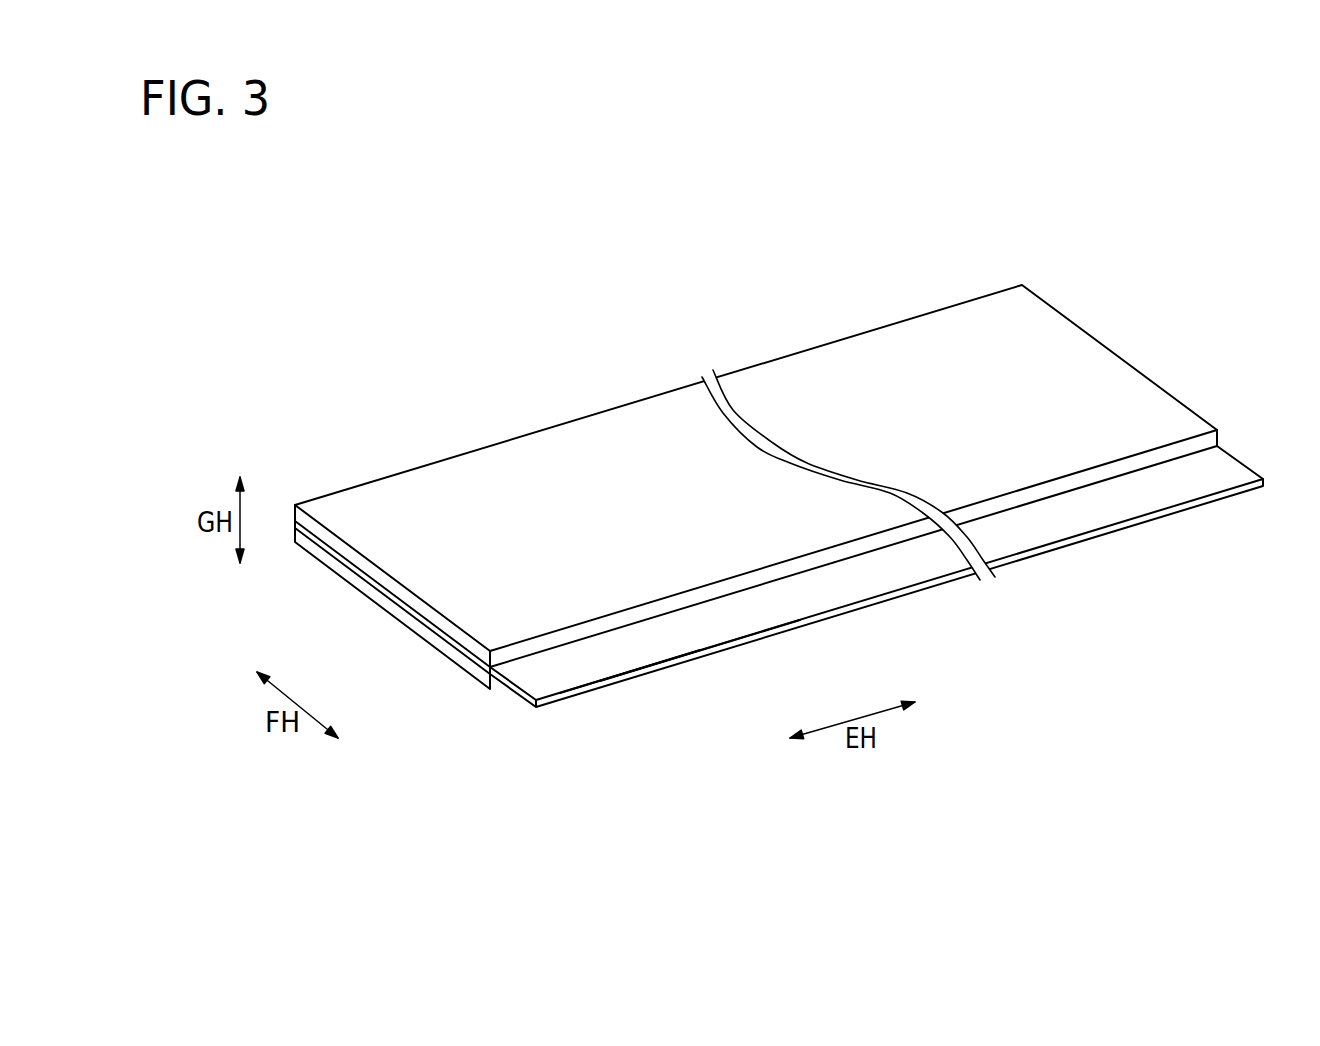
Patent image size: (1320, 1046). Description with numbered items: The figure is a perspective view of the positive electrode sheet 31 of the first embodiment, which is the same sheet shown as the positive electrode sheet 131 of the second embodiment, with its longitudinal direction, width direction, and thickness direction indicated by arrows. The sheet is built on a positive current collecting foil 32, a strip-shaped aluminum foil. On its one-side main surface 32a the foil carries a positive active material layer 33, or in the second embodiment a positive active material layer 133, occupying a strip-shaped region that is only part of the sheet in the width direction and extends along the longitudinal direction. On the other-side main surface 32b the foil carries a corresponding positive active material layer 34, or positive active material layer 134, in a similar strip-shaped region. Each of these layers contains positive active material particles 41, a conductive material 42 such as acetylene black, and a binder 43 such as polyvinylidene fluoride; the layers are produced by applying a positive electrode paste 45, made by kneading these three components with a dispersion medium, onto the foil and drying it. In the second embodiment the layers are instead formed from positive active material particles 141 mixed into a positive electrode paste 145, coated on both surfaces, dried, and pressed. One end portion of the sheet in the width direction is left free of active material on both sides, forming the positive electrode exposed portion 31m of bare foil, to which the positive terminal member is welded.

The positive electrode sheet 31 is at (773, 534).
The positive electrode sheet 131 is at (773, 534).
The positive electrode exposed portion 31m is at (1093, 517).
The positive current collecting foil 32 is at (779, 601).
The one-side main surface 32a is at (677, 643).
The other-side main surface 32b is at (593, 692).
The positive active material layer 33 is at (750, 476).
The positive active material layer 133 is at (472, 467).
The positive active material layer 34 is at (471, 689).
The positive active material layer 134 is at (423, 640).
The positive active material particles 41 is at (773, 534).
The conductive material 42 is at (773, 534).
The binder 43 is at (773, 534).
The positive electrode paste 45 is at (773, 534).
The positive active material particles 141 is at (773, 534).
The positive electrode paste 145 is at (773, 534).